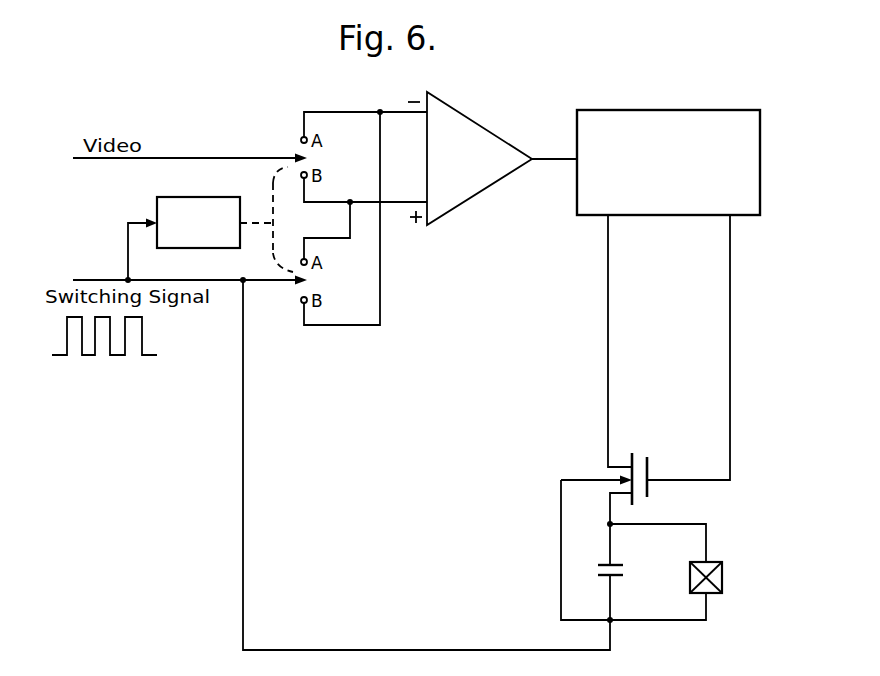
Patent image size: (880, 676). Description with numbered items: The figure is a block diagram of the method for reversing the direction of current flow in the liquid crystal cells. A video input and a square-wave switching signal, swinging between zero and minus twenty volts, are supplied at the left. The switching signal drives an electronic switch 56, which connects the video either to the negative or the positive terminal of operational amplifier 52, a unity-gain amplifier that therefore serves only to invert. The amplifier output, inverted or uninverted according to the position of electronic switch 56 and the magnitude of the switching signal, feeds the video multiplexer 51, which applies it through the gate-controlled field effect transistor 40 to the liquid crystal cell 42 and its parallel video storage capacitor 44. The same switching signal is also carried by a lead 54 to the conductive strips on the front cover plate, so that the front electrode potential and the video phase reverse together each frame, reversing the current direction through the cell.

The electronic switch 56 is at (245, 181).
The operational amplifier 52 is at (468, 130).
The video multiplexer 51 is at (758, 112).
The field effect transistor 40 is at (675, 464).
The video storage capacitor 44 is at (598, 566).
The liquid crystal cell 42 is at (722, 562).
The lead 54 is at (488, 650).